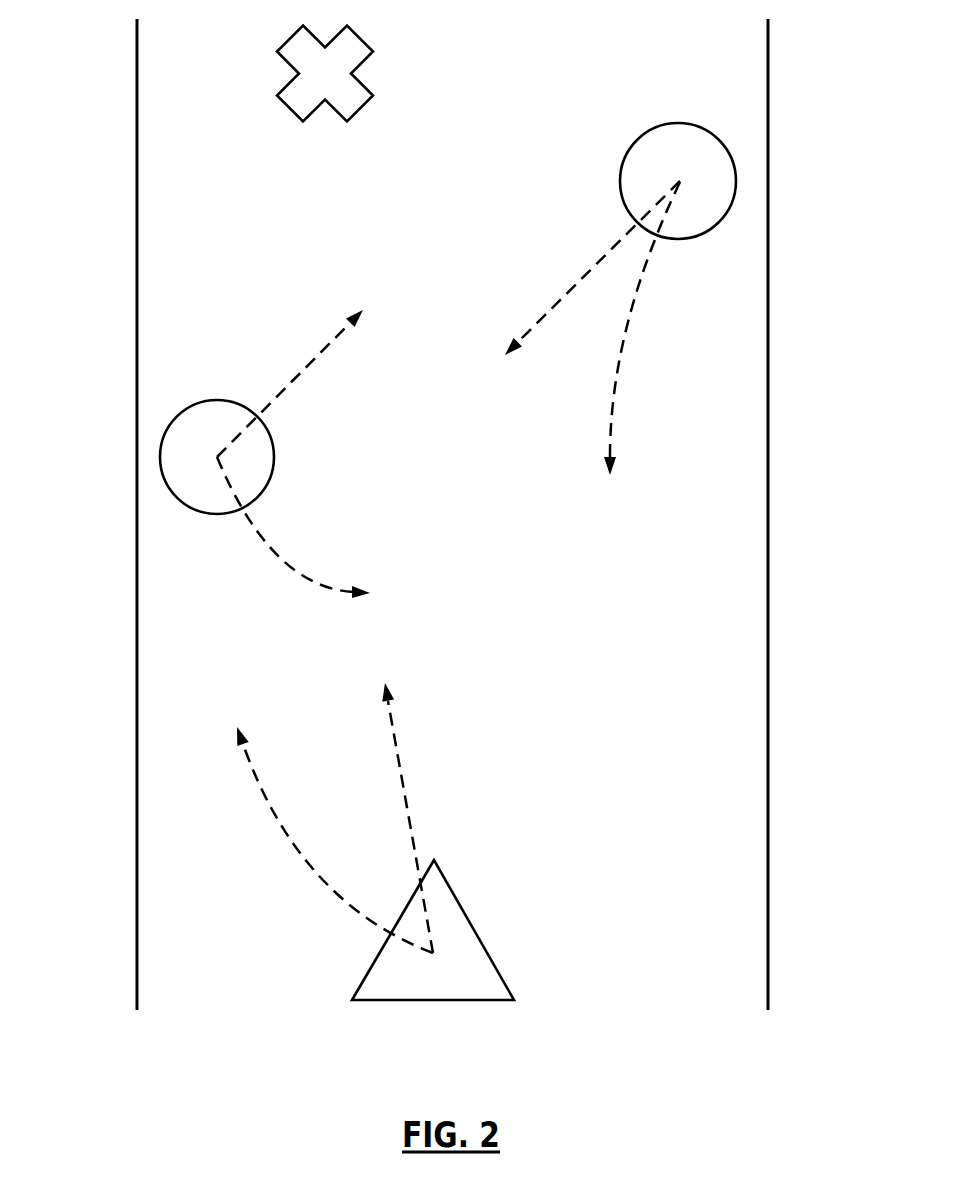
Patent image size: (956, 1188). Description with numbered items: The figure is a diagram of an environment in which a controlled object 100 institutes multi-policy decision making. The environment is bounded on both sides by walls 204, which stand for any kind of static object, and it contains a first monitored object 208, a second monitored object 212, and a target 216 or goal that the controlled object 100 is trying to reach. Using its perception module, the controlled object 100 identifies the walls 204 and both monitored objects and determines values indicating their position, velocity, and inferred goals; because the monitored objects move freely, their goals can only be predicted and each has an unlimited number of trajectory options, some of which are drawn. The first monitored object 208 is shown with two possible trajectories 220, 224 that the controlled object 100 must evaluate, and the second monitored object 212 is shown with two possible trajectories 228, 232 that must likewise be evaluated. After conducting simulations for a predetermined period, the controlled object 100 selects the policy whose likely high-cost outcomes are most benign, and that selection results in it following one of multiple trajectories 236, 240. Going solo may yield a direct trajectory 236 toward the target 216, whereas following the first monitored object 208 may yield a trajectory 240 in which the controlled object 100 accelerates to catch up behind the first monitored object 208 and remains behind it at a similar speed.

The controlled object 100 is at (493, 963).
The walls 204 is at (137, 177).
The first monitored object 208 is at (195, 512).
The second monitored object 212 is at (633, 148).
The target 216 is at (360, 38).
The trajectory 220 is at (308, 576).
The trajectory 224 is at (312, 361).
The trajectory 228 is at (622, 353).
The trajectory 232 is at (569, 290).
The trajectory 236 is at (401, 775).
The trajectory 240 is at (278, 815).